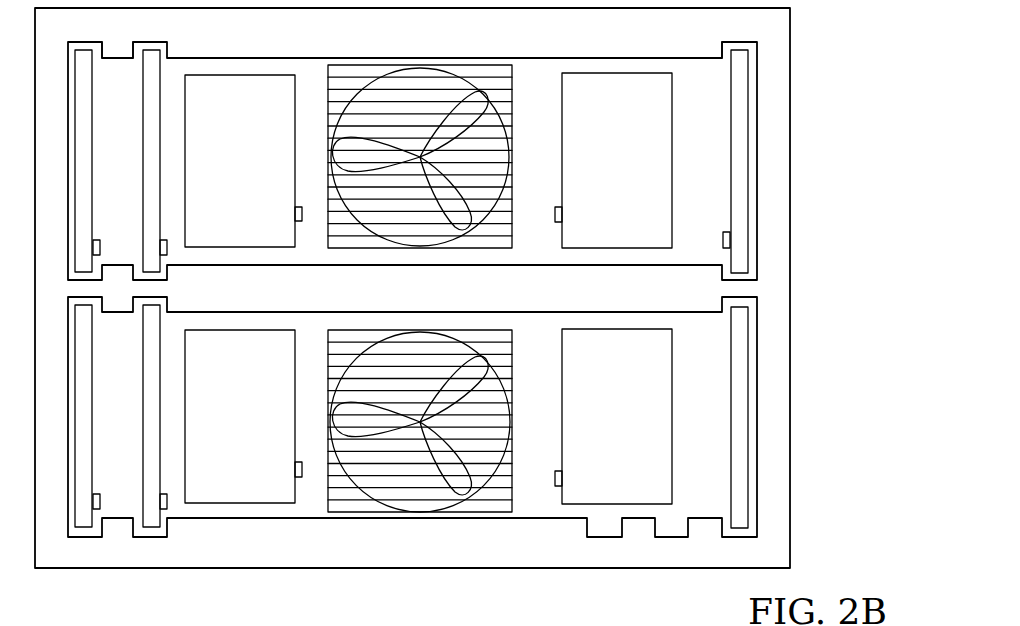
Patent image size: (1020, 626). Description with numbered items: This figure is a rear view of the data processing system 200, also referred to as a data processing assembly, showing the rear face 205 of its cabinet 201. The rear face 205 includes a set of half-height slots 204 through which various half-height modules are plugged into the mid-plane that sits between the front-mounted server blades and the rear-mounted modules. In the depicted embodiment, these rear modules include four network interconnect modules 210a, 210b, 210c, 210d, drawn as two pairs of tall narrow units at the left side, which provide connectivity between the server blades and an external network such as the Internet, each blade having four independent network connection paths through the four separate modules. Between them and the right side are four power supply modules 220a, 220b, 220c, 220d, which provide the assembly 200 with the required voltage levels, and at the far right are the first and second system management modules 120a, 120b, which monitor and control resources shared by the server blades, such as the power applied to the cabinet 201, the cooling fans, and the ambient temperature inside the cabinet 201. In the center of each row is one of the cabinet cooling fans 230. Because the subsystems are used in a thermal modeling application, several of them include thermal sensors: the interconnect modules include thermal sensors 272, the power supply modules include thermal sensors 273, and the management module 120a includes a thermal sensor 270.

The data processing system 200 is at (832, 206).
The cabinet 201 is at (790, 345).
The half-height slots 204 is at (102, 48).
The rear face 205 is at (781, 564).
The network interconnect module 210a is at (149, 193).
The network interconnect module 210b is at (150, 423).
The network interconnect module 210c is at (85, 143).
The network interconnect module 210d is at (85, 372).
The first system management module 120a is at (740, 127).
The second system management module 120b is at (740, 373).
The power supply module 220a is at (635, 167).
The power supply module 220b is at (643, 415).
The power supply module 220c is at (265, 177).
The power supply module 220d is at (275, 415).
The cabinet cooling fans 230 is at (422, 243).
The thermal sensor 270 is at (727, 232).
The thermal sensors 272 is at (118, 233).
The thermal sensors 273 is at (302, 216).